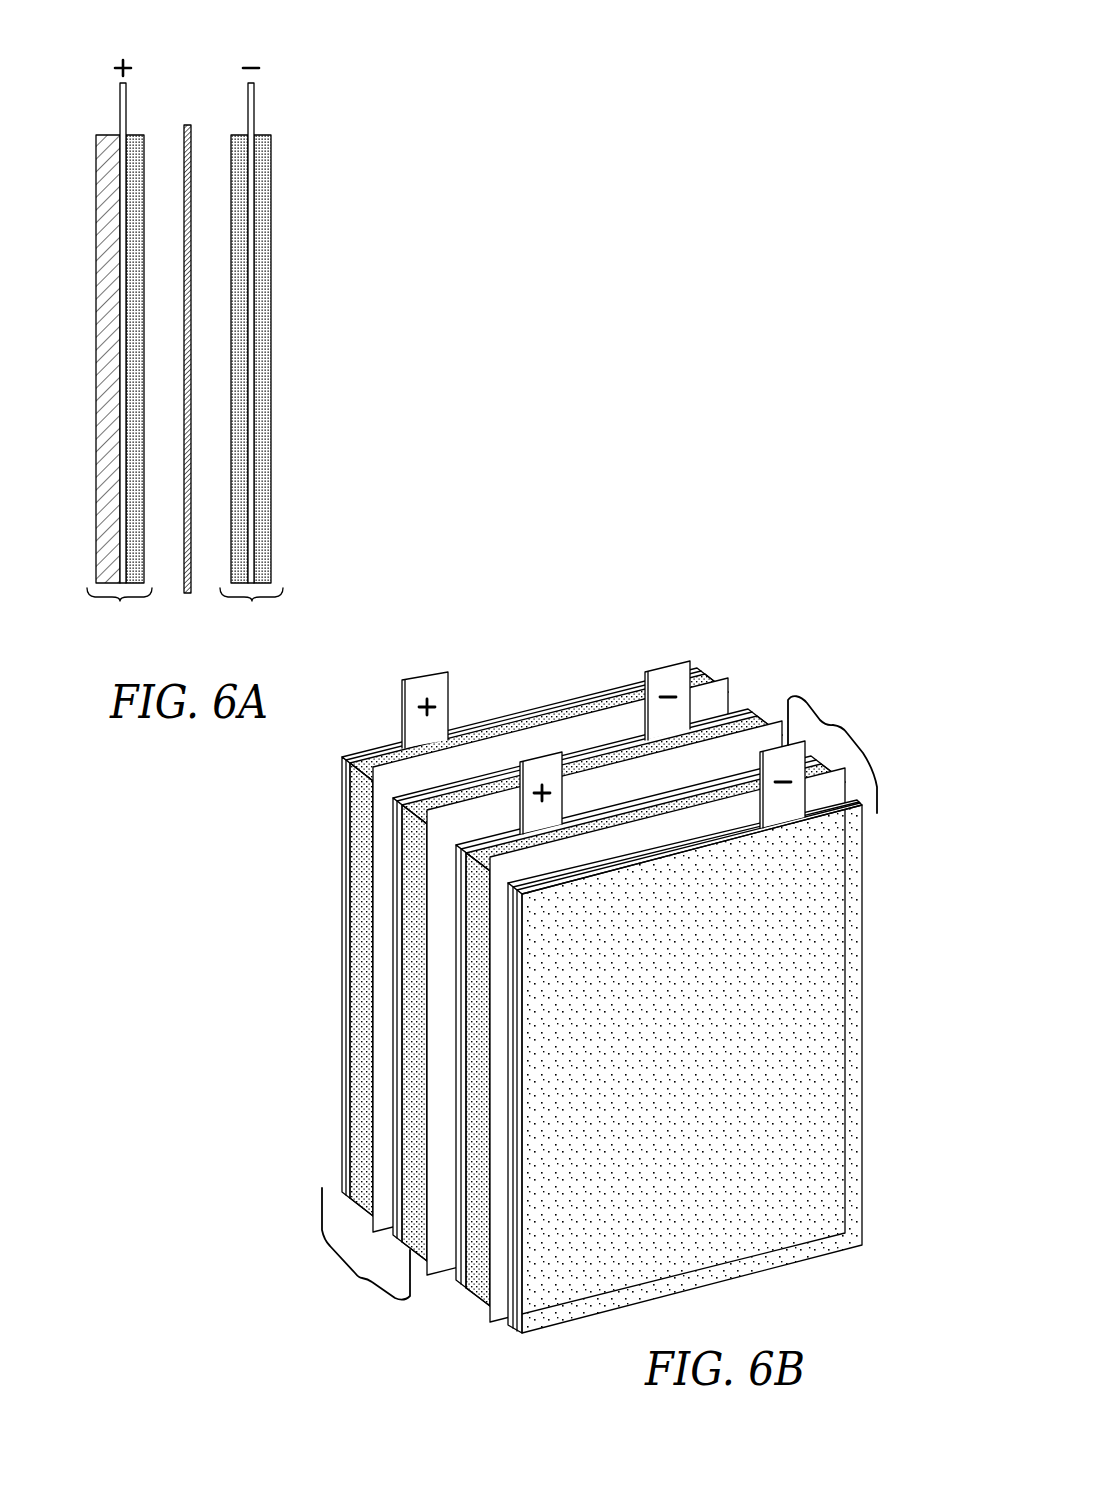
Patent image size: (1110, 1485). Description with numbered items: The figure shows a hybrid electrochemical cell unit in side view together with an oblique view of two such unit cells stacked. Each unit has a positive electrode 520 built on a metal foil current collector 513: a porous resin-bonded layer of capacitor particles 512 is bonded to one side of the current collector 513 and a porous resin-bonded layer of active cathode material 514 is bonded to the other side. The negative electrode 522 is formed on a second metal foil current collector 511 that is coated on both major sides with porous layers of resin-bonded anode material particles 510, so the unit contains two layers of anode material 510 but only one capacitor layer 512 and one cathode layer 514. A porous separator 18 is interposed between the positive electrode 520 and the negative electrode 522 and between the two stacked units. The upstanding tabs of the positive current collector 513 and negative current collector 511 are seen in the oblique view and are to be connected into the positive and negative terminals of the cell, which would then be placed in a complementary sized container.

In FIG. 6A, the separator 18 is at (189, 125).
In FIG. 6B, the separator 18 is at (722, 757).
In FIG. 6A, the anode material particles 510 is at (240, 182).
In FIG. 6A, the metal foil current collector 511 is at (255, 97).
In FIG. 6B, the metal foil current collector 511 is at (668, 680).
In FIG. 6A, the capacitor particles 512 is at (105, 220).
In FIG. 6A, the metal foil current collector 513 is at (118, 97).
In FIG. 6B, the metal foil current collector 513 is at (423, 688).
In FIG. 6A, the active cathode material 514 is at (127, 182).
In FIG. 6A, the positive electrode 520 is at (87, 326).
In FIG. 6B, the positive electrode 520 is at (592, 972).
In FIG. 6A, the negative electrode 522 is at (284, 326).
In FIG. 6B, the negative electrode 522 is at (617, 984).